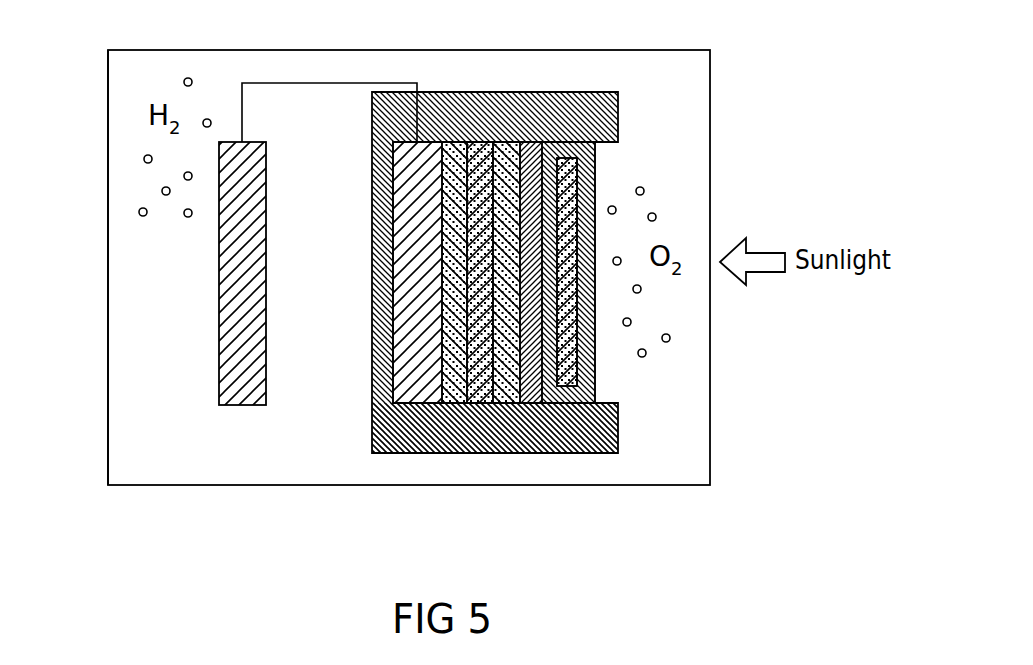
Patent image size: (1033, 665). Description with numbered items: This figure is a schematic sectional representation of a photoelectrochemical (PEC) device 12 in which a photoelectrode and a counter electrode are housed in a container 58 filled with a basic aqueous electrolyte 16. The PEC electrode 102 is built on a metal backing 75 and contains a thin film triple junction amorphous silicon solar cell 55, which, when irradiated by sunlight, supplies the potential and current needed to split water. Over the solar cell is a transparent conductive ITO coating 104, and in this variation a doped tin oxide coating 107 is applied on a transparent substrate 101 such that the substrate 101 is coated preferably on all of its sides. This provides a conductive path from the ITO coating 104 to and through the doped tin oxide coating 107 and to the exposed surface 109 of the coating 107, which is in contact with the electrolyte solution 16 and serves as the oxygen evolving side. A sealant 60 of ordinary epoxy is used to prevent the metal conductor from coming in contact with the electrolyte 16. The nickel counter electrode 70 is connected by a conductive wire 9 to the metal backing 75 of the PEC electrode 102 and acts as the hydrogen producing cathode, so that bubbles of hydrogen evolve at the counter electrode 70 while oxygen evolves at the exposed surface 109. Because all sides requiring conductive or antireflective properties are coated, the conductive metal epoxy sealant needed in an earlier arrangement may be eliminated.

The conductive wire 9 is at (317, 83).
The photoelectrochemical cell 12 is at (647, 479).
The electrolyte 16 is at (333, 285).
The thin film triple junction amorphous silicon solar cell 55 is at (508, 403).
The container 58 is at (108, 157).
The sealant 60 is at (373, 440).
The counter electrode 70 is at (219, 323).
The metal backing 75 is at (420, 393).
The transparent substrate 101 is at (565, 160).
The PEC electrode 102 is at (608, 387).
The ITO coating 104 is at (528, 142).
The doped tin oxide coating 107 is at (553, 403).
The exposed surface 109 is at (594, 172).